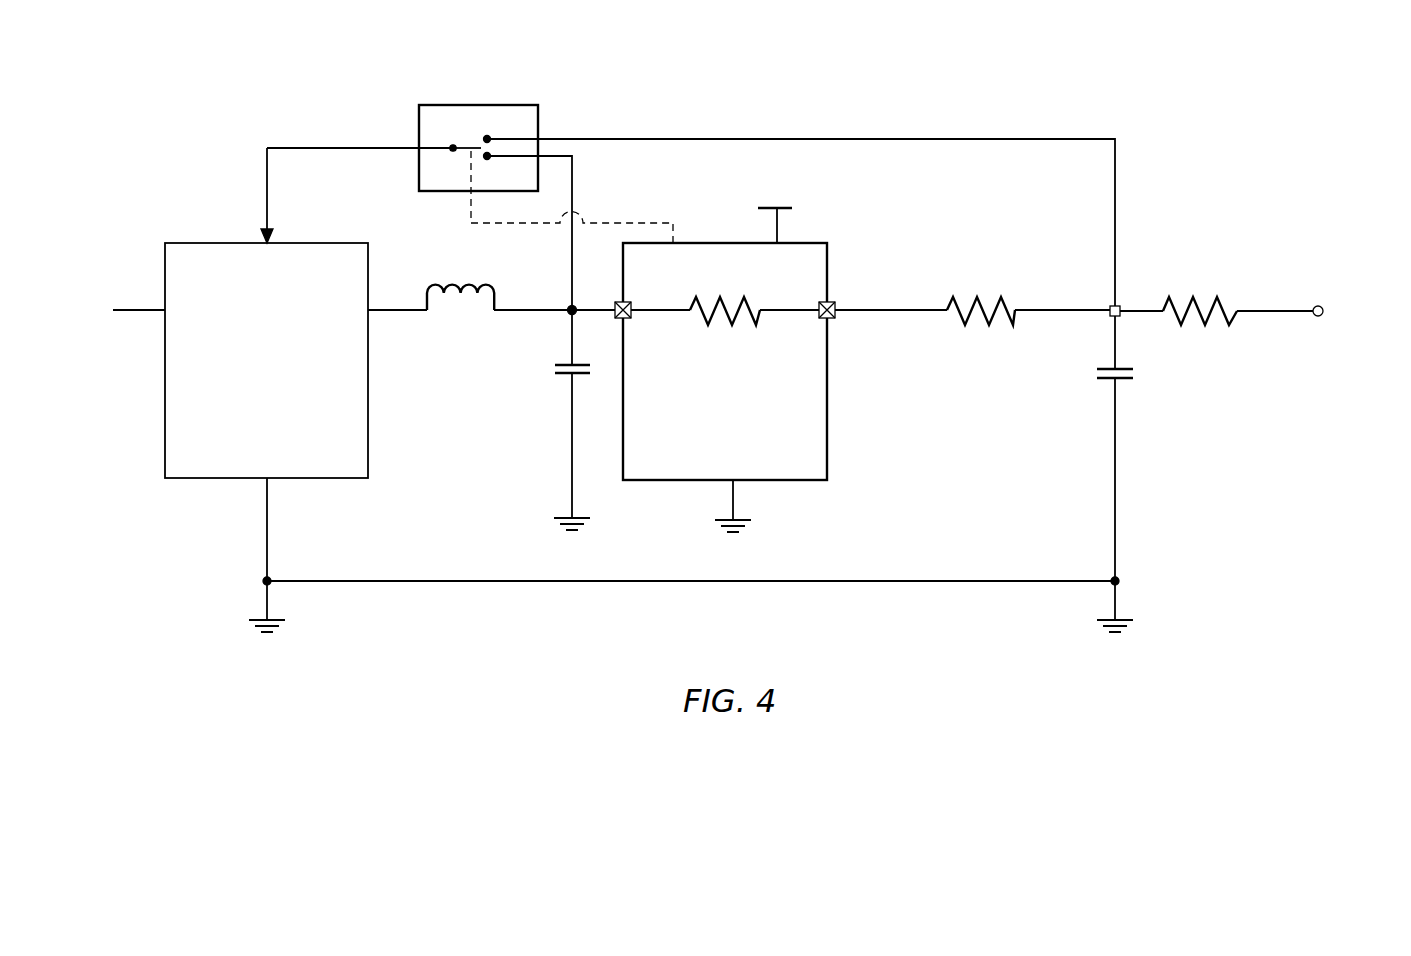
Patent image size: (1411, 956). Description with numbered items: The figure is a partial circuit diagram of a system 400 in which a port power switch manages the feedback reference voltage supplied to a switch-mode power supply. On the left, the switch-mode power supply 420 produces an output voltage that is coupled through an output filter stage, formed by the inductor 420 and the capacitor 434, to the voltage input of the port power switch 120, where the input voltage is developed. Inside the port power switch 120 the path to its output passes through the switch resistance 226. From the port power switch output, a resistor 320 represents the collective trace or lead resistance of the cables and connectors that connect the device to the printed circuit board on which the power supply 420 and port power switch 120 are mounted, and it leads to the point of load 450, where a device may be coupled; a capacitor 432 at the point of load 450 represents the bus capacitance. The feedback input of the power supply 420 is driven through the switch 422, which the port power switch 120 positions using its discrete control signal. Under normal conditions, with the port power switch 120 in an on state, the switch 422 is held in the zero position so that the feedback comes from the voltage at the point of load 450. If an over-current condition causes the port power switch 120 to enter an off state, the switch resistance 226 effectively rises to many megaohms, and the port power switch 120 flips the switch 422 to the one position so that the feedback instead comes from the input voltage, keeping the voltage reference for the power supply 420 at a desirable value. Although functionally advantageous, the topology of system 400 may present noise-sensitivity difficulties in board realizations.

The system 400 is at (249, 82).
The switch 422 is at (1255, 361).
The switch-mode power supply 420 is at (463, 292).
The capacitor 434 is at (558, 378).
The port power switch 120 is at (781, 343).
The switch resistance RSW 226 is at (723, 313).
The resistor 320 is at (987, 327).
The point of load 450 is at (1118, 306).
The capacitor 432 is at (1127, 380).